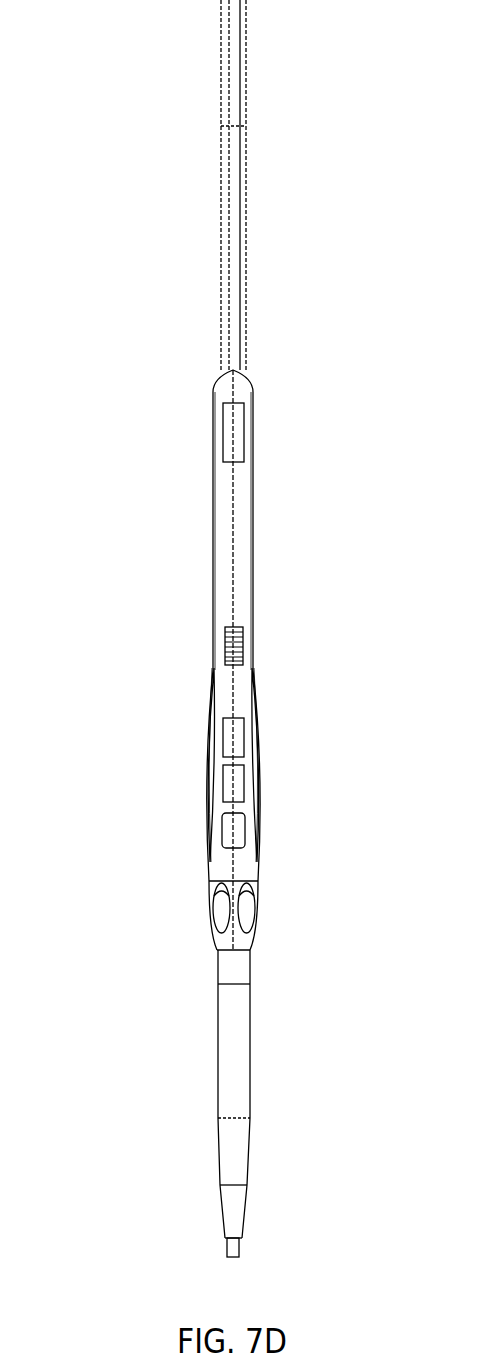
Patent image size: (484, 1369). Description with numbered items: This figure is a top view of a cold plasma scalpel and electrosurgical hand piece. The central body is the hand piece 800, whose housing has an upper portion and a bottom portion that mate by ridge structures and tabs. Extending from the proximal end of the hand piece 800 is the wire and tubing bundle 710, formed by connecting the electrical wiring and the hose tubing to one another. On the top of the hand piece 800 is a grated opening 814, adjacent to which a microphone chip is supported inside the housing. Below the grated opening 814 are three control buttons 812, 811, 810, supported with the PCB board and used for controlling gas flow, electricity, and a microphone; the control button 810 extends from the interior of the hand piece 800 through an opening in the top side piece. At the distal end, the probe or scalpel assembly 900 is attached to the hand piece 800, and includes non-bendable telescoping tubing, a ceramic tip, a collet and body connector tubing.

The wire and tubing bundle 710 is at (242, 325).
The hand piece 800 is at (227, 597).
The grated opening 814 is at (235, 652).
The control button 812 is at (232, 738).
The control button 811 is at (234, 785).
The control button 810 is at (238, 830).
The scalpel assembly 900 is at (237, 1035).